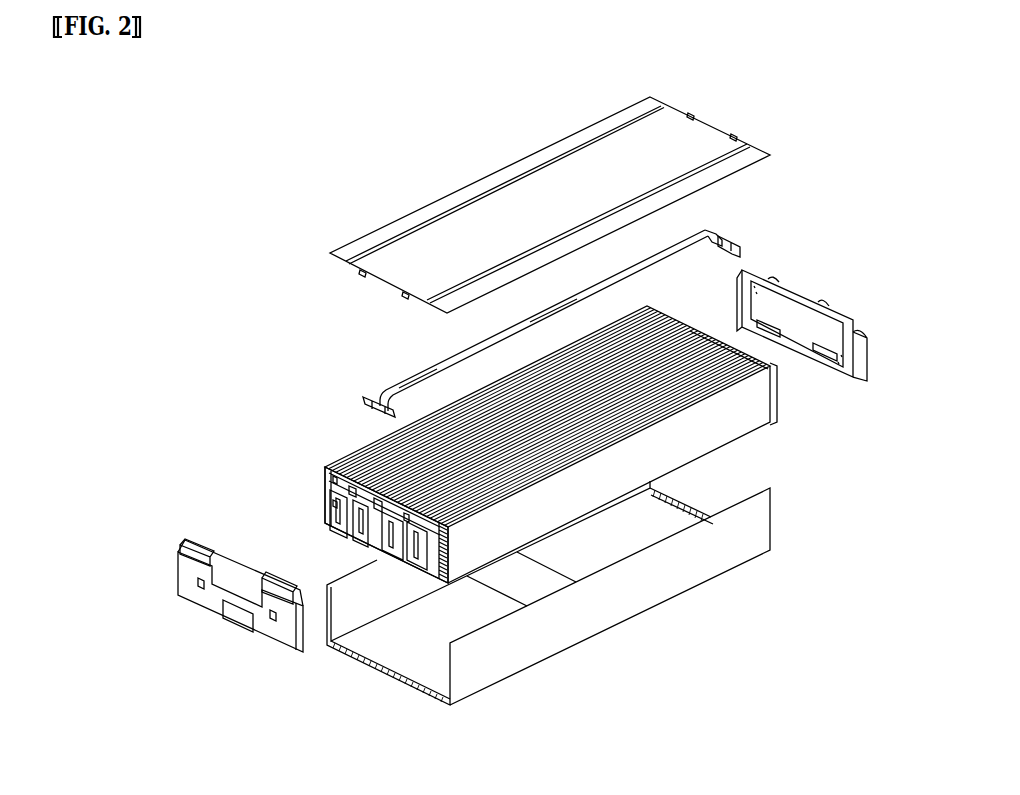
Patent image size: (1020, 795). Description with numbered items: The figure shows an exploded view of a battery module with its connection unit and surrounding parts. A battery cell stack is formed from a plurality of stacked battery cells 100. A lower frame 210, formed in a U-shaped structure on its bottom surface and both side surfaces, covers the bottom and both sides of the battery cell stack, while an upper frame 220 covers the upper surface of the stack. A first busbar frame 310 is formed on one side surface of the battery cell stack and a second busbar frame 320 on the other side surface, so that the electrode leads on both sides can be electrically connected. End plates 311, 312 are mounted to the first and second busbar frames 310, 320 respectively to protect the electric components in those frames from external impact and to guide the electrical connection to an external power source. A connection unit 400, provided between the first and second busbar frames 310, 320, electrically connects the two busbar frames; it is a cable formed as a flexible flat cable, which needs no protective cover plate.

The battery cells 100 is at (722, 432).
The lower frame 210 is at (623, 604).
The upper frame 220 is at (492, 183).
The first busbar frame 310 is at (337, 509).
The end plate 311 is at (280, 637).
The end plate 312 is at (800, 292).
The second busbar frame 320 is at (777, 396).
The connection unit 400 is at (402, 384).